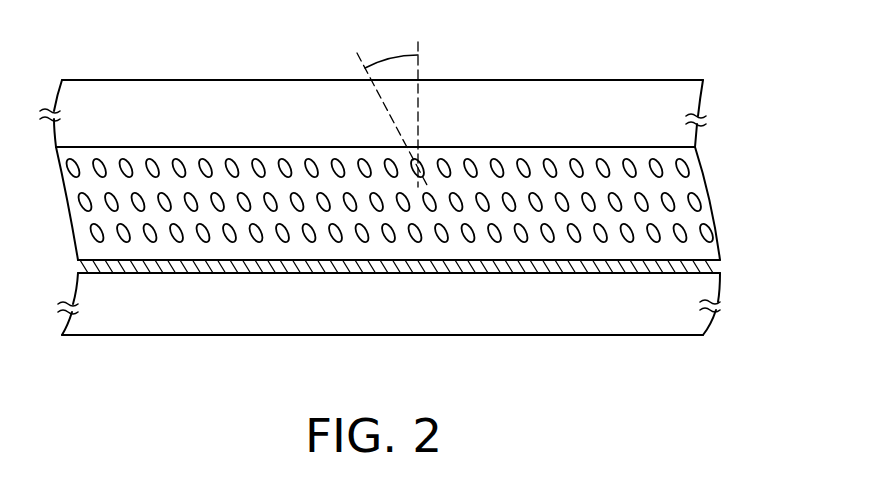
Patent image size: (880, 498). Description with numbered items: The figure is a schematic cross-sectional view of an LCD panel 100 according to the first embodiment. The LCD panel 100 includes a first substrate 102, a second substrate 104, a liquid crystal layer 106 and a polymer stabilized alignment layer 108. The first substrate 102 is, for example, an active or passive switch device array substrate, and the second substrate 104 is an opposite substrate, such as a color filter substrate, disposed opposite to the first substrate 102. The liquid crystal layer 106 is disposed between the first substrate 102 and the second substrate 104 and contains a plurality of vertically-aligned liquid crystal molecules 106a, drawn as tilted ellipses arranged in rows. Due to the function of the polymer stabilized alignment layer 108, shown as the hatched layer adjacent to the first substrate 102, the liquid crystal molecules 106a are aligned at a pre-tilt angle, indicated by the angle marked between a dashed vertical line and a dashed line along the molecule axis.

The LCD panel 100 is at (415, 215).
The first substrate 102 is at (688, 286).
The second substrate 104 is at (672, 97).
The liquid crystal layer 106 is at (697, 222).
The liquid crystal molecules 106a is at (686, 168).
The polymer stabilized alignment layer 108 is at (710, 268).